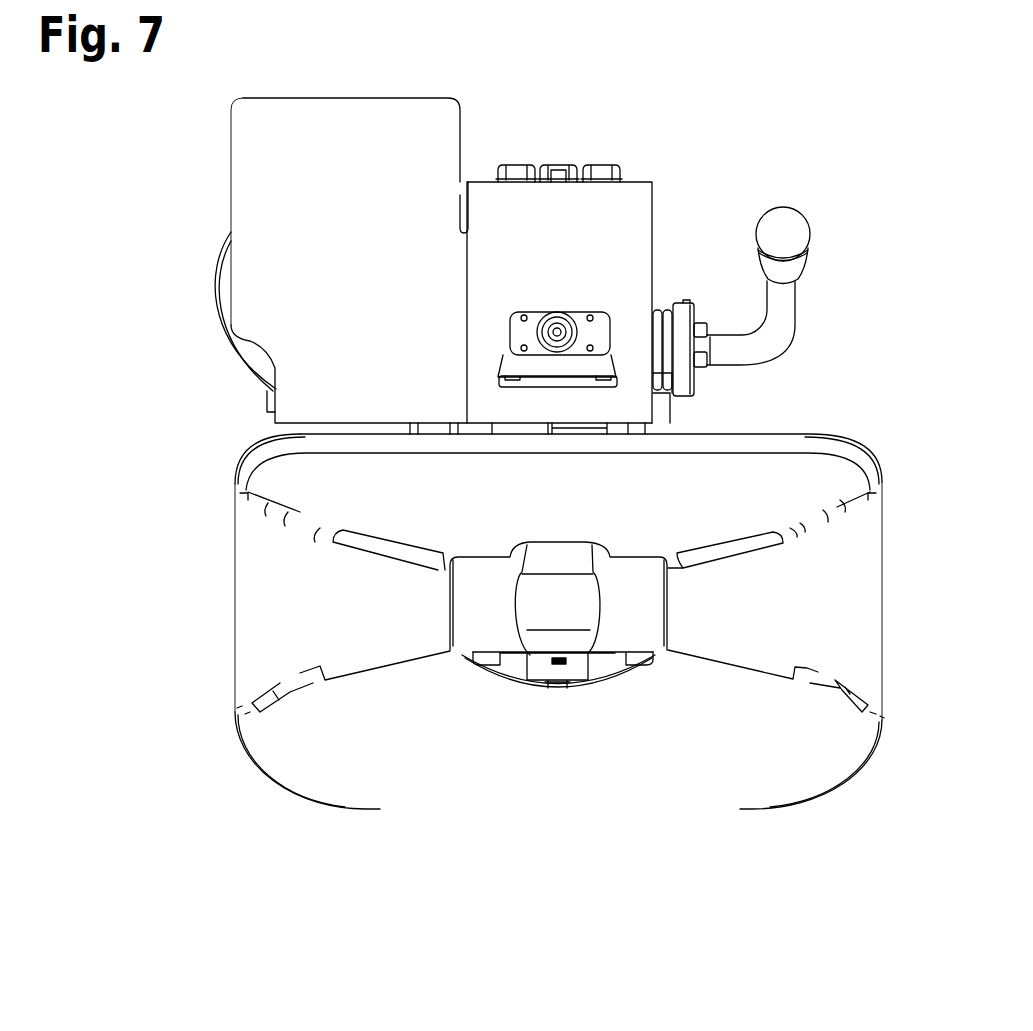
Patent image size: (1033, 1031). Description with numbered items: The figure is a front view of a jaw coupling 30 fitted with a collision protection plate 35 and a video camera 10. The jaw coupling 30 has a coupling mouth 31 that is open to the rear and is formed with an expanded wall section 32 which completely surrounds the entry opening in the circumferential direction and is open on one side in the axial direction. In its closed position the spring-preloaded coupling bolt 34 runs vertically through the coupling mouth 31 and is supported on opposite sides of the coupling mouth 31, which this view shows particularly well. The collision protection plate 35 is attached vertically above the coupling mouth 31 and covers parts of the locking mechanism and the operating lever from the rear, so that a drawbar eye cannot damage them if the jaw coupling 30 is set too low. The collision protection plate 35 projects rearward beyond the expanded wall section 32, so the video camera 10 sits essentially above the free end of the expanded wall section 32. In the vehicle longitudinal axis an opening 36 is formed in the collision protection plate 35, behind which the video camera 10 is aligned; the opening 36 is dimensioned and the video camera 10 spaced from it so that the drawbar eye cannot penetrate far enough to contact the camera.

The video camera 10 is at (528, 333).
The jaw coupling 30 is at (486, 706).
The coupling mouth 31 is at (690, 775).
The expanded wall section 32 is at (287, 590).
The coupling bolt 34 is at (573, 620).
The collision protection plate 35 is at (386, 288).
The opening 36 is at (610, 327).